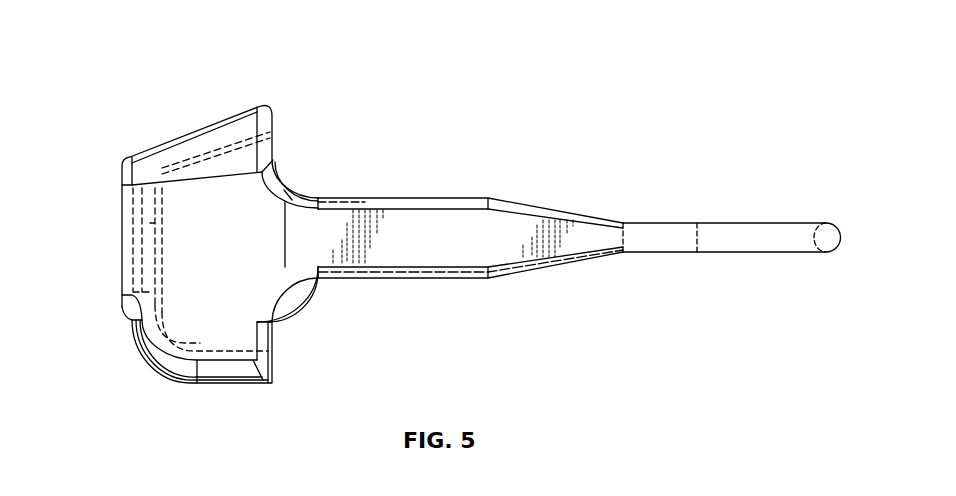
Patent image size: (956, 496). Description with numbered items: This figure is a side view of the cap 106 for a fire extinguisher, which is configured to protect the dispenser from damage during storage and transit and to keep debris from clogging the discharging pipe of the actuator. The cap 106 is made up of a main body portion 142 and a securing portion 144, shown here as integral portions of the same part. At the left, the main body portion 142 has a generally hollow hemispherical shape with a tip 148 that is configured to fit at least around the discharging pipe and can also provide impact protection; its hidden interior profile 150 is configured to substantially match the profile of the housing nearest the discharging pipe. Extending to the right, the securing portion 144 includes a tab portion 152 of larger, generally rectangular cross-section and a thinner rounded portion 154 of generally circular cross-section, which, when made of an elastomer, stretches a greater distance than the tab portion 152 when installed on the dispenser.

The cap 106 is at (131, 54).
The main body portion 142 is at (134, 125).
The securing portion 144 is at (642, 152).
The tip 148 is at (122, 238).
The interior profile 150 is at (217, 143).
The tab portion 152 is at (418, 302).
The rounded portion 154 is at (752, 273).